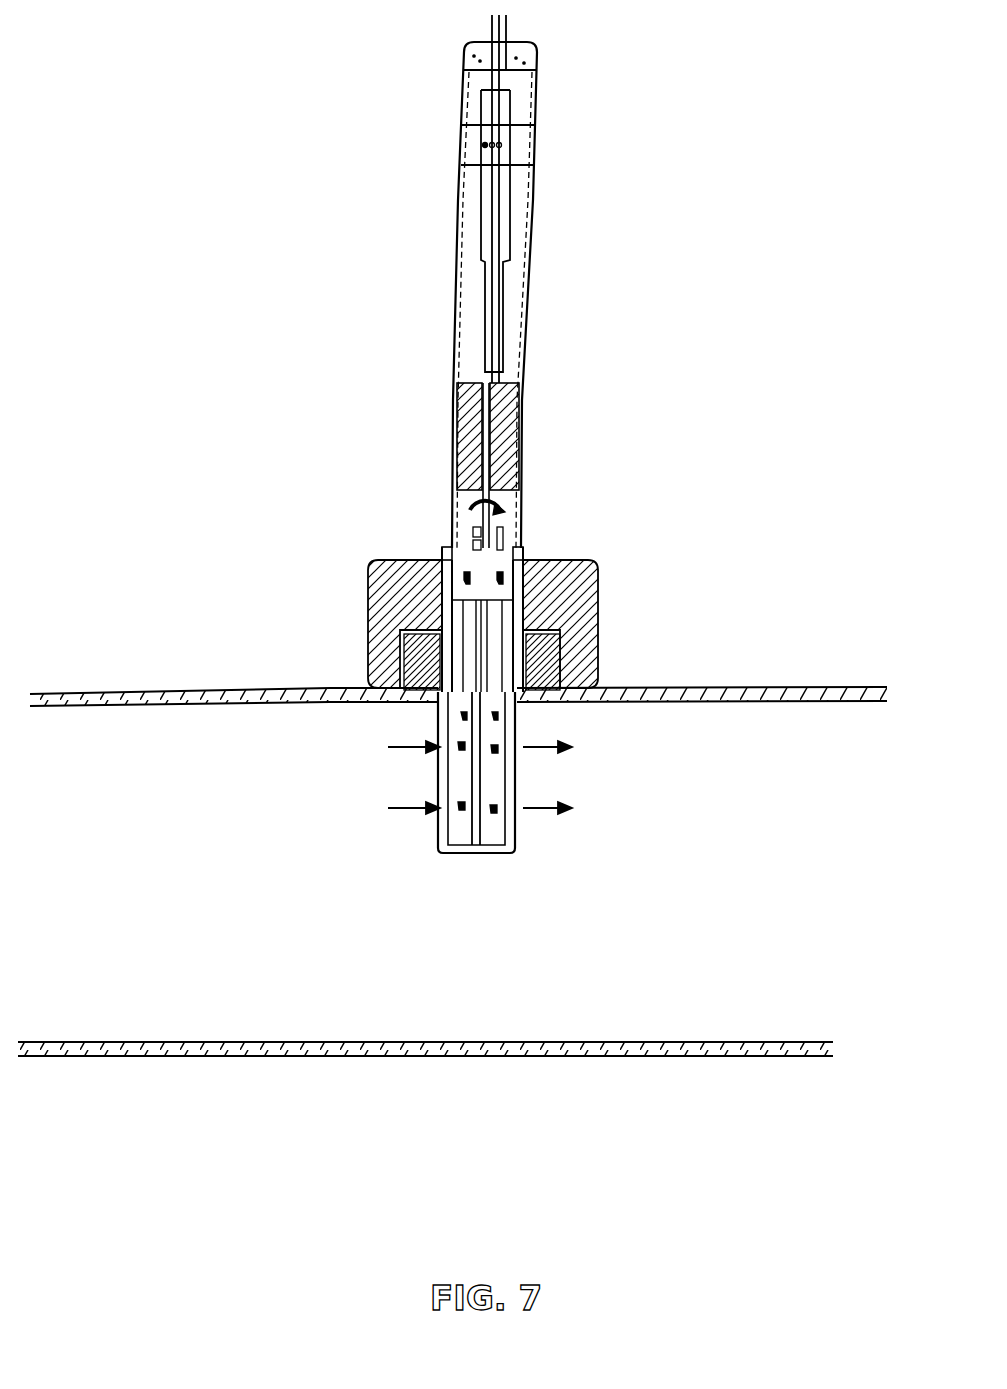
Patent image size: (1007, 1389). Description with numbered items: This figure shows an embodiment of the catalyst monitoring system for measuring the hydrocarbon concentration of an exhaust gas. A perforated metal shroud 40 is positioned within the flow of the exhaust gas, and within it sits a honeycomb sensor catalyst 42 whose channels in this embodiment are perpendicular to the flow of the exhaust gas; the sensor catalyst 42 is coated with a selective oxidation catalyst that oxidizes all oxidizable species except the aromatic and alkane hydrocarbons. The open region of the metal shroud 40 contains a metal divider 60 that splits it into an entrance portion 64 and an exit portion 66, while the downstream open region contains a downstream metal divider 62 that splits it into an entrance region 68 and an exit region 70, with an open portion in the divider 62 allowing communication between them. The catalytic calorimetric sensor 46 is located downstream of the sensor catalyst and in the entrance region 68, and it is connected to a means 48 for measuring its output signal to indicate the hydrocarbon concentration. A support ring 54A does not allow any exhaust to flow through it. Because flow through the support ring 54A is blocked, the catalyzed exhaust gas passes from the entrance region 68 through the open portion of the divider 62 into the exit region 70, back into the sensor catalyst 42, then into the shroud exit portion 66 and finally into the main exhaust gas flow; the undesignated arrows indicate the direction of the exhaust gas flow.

The perforated metal shroud 40 is at (457, 850).
The honeycomb sensor catalyst 42 is at (485, 678).
The catalytic calorimetric sensor 46 is at (490, 535).
The means for measuring the output signal 48 is at (508, 188).
The support ring 54A is at (522, 405).
The metal divider 60 is at (480, 775).
The downstream metal divider 62 is at (518, 548).
The entrance portion 64 is at (460, 783).
The exit portion 66 is at (487, 823).
The entrance region 68 is at (465, 556).
The exit region 70 is at (495, 545).